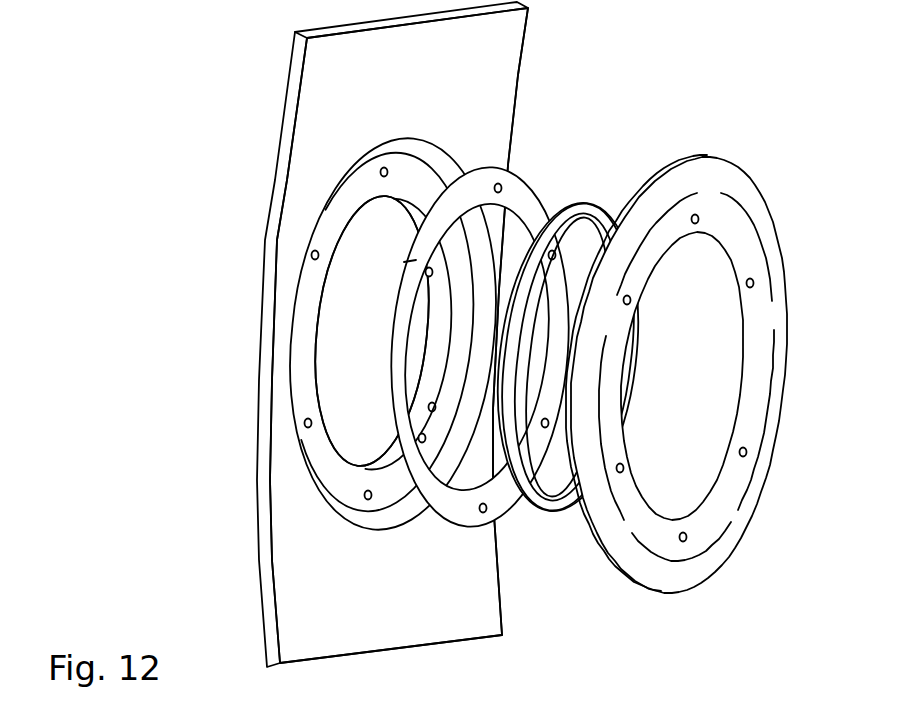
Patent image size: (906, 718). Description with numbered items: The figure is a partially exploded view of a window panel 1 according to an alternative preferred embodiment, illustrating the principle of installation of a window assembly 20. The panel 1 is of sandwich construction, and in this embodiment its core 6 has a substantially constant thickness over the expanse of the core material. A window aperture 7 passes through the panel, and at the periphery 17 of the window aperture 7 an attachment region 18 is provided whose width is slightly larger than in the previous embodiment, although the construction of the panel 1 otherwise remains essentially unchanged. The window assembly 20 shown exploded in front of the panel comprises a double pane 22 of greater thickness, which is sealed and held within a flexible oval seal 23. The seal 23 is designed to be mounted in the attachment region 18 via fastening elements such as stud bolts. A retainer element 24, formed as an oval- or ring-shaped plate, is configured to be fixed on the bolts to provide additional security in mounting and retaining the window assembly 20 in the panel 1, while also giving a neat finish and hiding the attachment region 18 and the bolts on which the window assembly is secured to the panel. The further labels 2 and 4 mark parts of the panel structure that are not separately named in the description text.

The window panel 1 is at (195, 68).
The front wall panel 2 is at (258, 213).
The wall 4 is at (504, 44).
The core 6 is at (267, 352).
The window aperture 7 is at (369, 348).
The periphery 17 is at (305, 386).
The attachment region 18 is at (312, 277).
The window assembly 20 is at (569, 565).
The double pane 22 is at (586, 202).
The flexible oval seal 23 is at (517, 170).
The retainer element 24 is at (742, 523).